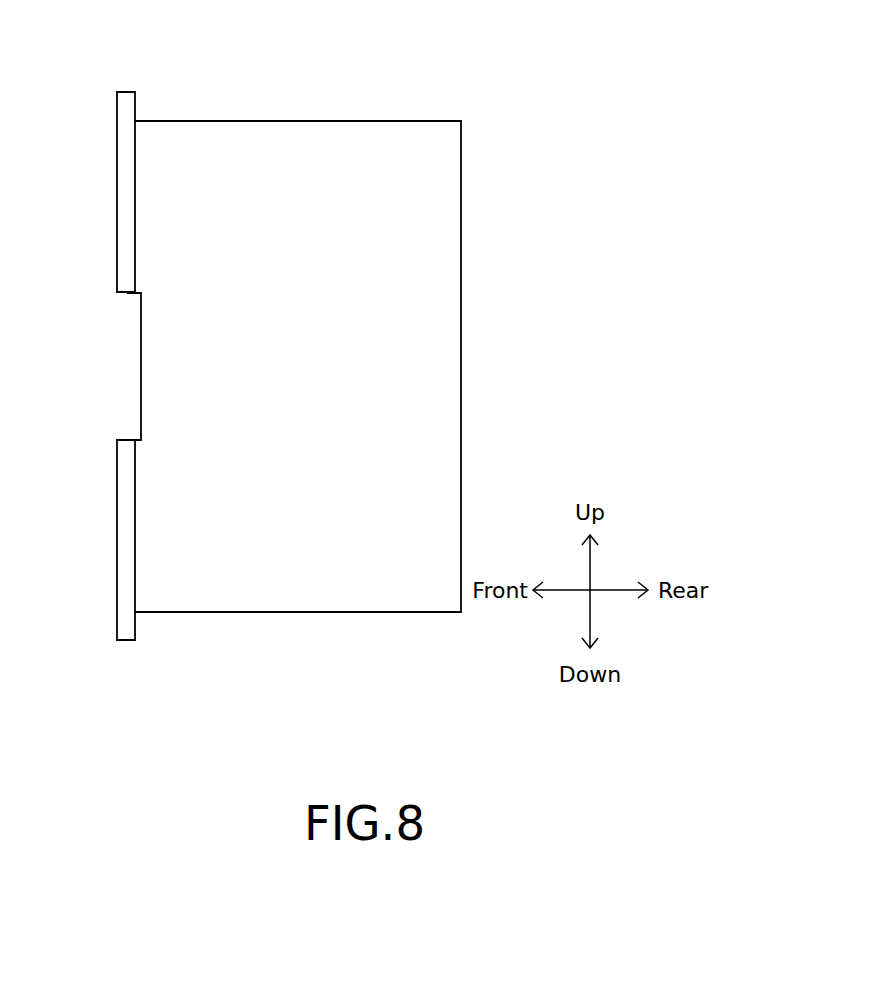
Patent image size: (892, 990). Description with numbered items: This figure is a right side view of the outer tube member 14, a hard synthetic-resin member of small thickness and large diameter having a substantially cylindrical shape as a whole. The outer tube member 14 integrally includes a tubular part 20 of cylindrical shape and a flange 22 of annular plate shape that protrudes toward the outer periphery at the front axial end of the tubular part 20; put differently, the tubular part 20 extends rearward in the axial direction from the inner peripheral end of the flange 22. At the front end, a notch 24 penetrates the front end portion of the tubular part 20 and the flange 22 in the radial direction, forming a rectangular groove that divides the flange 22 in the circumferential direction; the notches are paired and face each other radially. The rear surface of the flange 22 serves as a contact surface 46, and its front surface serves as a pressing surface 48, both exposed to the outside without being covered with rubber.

The outer tube member 14 is at (513, 108).
The tubular part 20 is at (433, 366).
The flange 22 is at (128, 198).
The notch 24 is at (127, 293).
The contact surface 46 is at (135, 463).
The pressing surface 48 is at (118, 541).